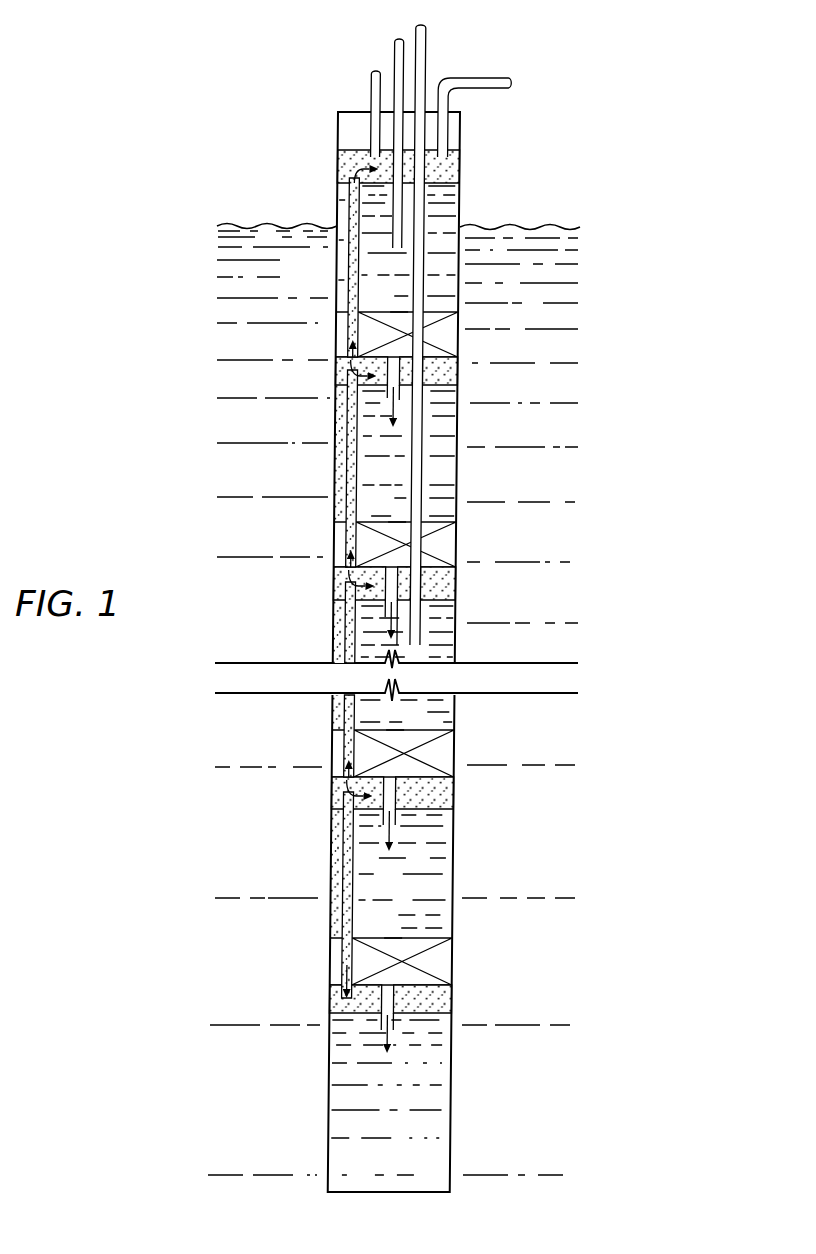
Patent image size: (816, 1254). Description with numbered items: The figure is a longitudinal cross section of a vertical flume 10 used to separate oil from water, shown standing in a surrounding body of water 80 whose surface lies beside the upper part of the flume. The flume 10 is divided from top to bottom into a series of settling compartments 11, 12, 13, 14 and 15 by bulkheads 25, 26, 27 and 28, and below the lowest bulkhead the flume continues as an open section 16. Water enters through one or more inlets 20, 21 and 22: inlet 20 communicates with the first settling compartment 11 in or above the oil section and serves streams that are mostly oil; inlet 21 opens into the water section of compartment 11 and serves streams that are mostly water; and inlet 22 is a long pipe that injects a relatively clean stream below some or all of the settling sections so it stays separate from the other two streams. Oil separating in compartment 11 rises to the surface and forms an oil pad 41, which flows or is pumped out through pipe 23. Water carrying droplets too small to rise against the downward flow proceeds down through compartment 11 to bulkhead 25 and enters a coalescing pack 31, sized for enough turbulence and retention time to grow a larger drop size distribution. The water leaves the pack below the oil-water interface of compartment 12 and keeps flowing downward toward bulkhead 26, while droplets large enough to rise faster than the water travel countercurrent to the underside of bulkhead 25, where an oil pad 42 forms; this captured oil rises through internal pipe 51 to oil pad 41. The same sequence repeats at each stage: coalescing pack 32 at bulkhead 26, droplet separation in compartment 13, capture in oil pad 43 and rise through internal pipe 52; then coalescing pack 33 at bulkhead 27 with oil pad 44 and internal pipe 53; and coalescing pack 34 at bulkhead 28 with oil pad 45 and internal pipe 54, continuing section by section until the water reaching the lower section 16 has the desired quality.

The flume 10 is at (335, 513).
The first settling compartment 11 is at (374, 266).
The settling compartment 12 is at (372, 470).
The settling compartment 13 is at (364, 629).
The settling compartment 14 is at (363, 710).
The settling compartment 15 is at (366, 888).
The sixth zone 16 is at (343, 1097).
The inlet 20 is at (371, 86).
The inlet 21 is at (394, 52).
The inlet 22 is at (426, 34).
The pipe 23 is at (477, 77).
The bulkhead 25 is at (400, 311).
The bulkhead 26 is at (401, 522).
The bulkhead 27 is at (400, 730).
The bulkhead 28 is at (406, 938).
The coalescing pack 31 is at (447, 337).
The coalescing pack 32 is at (446, 537).
The coalescing pack 33 is at (443, 745).
The coalescing pack 34 is at (443, 958).
The oil pad 41 is at (458, 165).
The oil pad 42 is at (453, 372).
The oil pad 43 is at (452, 584).
The oil pad 44 is at (443, 796).
The oil pad 45 is at (440, 998).
The internal pipe 51 is at (352, 209).
The internal pipe 52 is at (352, 431).
The internal pipe 53 is at (350, 645).
The internal pipe 54 is at (348, 851).
The surrounding body of water 80 is at (544, 227).